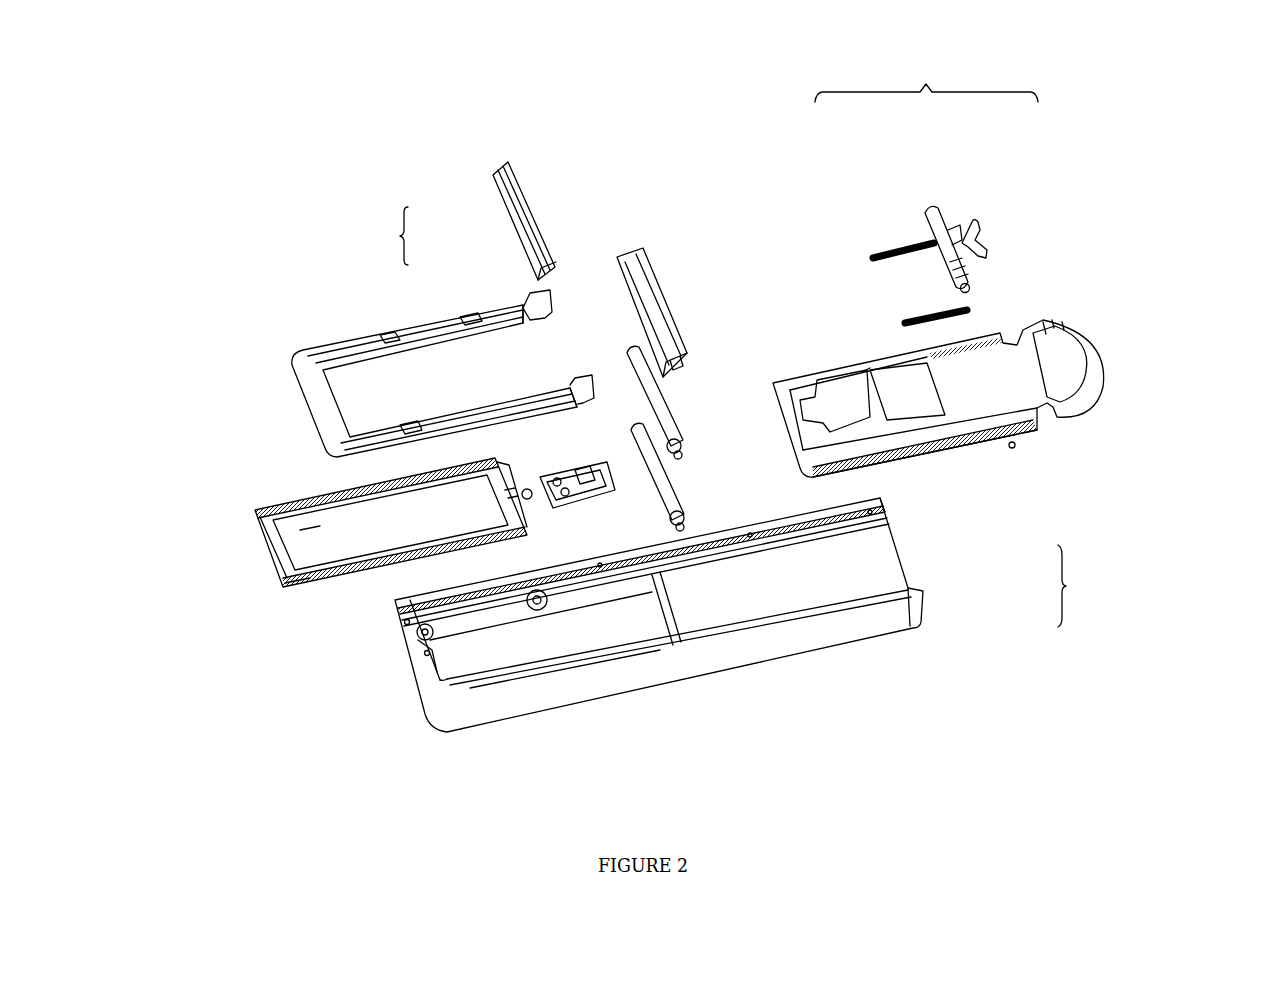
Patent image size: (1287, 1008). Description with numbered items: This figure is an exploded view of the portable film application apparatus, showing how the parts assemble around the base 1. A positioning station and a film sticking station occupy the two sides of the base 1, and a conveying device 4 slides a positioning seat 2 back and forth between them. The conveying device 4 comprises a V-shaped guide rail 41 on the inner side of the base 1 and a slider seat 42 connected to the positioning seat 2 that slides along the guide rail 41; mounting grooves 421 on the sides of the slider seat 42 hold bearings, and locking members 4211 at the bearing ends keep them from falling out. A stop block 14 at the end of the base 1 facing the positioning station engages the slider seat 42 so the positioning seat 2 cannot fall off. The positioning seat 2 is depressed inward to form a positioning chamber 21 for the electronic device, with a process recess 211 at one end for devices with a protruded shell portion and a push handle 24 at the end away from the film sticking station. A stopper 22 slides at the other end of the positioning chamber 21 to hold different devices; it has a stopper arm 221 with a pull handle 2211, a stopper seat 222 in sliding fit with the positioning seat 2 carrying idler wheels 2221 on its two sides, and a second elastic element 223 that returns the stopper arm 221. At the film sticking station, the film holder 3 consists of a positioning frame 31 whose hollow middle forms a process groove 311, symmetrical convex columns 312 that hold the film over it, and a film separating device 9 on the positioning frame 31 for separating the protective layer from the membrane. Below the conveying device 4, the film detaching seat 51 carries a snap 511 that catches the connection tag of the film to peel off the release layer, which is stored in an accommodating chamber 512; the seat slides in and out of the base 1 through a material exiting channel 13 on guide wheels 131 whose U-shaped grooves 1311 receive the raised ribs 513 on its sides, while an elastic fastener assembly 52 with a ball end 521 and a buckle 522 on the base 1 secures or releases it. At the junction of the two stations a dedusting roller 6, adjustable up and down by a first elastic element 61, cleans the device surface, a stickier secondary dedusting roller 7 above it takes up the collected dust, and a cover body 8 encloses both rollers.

The base 1 is at (648, 673).
The material exiting channel 13 is at (503, 652).
The guide wheels 131 is at (415, 632).
The U-shaped grooves 1311 is at (427, 652).
The positioning seat 2 is at (1145, 367).
The positioning chamber 21 is at (882, 372).
The process recess 211 is at (863, 372).
The stop block 14 is at (837, 400).
The push handle 24 is at (1102, 383).
The stopper 22 is at (986, 182).
The stopper arm 221 is at (949, 228).
The stopper seat 222 is at (957, 232).
The second elastic element 223 is at (902, 238).
The pull handle 2211 is at (995, 243).
The idler wheels 2221 is at (975, 288).
The film holder 3 is at (185, 245).
The positioning frame 31 is at (300, 362).
The process groove 311 is at (433, 366).
The convex columns 312 is at (370, 355).
The conveying device 4 is at (781, 525).
The guide rail 41 is at (865, 533).
The slider seat 42 is at (927, 453).
The mounting grooves 421 is at (1000, 450).
The locking members 4211 is at (1027, 443).
The film detaching seat 51 is at (257, 515).
The snap 511 is at (350, 430).
The accommodating chamber 512 is at (315, 548).
The raised ribs 513 is at (300, 587).
The elastic fastener assembly 52 is at (488, 350).
The ball end 521 is at (573, 470).
The buckle 522 is at (527, 482).
The dedusting roller 6 is at (680, 500).
The first elastic element 61 is at (640, 427).
The secondary dedusting roller 7 is at (687, 430).
The cover body 8 is at (650, 300).
The film separating device 9 is at (522, 212).